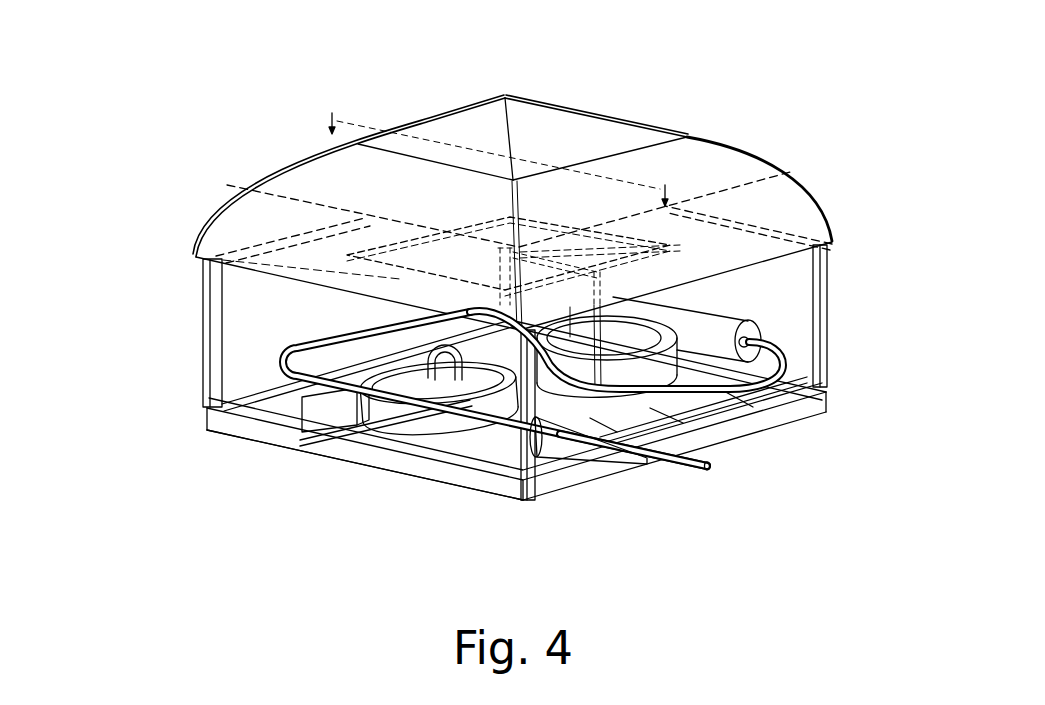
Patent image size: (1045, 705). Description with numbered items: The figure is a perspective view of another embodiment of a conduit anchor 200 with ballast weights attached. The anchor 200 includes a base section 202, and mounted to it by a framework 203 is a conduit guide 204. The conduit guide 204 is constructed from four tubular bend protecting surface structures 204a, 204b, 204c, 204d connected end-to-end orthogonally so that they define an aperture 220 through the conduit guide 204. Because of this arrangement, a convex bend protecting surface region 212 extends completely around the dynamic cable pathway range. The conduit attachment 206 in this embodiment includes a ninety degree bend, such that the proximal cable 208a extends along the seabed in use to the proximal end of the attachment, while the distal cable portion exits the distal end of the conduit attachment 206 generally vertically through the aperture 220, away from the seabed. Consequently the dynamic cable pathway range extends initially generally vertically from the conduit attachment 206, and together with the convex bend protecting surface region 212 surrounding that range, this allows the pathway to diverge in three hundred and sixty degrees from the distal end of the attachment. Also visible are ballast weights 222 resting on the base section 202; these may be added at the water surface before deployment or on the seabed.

The conduit anchor 200 is at (818, 60).
The base section 202 is at (250, 440).
The framework 203 is at (202, 325).
The conduit guide 204 is at (230, 190).
The tubular bend protecting surface structure 204a is at (395, 128).
The tubular bend protecting surface structure 204b is at (257, 218).
The tubular bend protecting surface structure 204c is at (727, 170).
The tubular bend protecting surface structure 204d is at (638, 126).
The conduit attachment 206 is at (473, 420).
The proximal cable 208a is at (705, 470).
The convex bend protecting surface region 212 is at (447, 130).
The aperture 220 is at (580, 124).
The ballast weights 222 is at (380, 473).